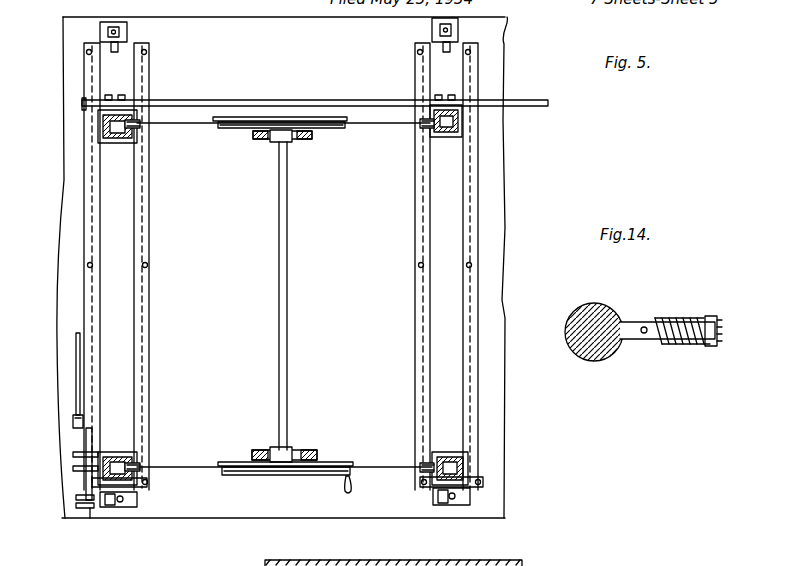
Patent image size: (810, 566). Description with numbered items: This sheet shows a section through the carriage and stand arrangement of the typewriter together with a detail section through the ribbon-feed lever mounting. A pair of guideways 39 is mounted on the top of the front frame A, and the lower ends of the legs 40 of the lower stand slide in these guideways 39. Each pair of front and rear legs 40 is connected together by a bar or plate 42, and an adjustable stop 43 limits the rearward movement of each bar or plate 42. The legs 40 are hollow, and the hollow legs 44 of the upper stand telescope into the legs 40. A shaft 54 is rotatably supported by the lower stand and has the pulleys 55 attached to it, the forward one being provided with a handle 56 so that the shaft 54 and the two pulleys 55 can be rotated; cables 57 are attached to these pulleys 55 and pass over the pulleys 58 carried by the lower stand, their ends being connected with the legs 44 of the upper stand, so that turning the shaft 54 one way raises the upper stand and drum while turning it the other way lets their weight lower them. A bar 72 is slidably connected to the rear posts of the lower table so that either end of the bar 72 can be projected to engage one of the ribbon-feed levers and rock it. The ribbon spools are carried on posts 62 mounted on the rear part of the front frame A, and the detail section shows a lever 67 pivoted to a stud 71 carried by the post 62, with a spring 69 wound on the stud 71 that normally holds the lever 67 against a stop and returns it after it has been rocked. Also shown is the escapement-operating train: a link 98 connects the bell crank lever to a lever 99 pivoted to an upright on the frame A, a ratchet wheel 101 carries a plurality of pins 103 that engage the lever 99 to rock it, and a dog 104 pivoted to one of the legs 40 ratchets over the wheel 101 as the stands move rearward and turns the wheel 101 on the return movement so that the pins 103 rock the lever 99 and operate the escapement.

In FIG. 5, the front frame A is at (497, 302).
In FIG. 5, the guideways 39 is at (88, 240).
In FIG. 5, the legs 40 is at (125, 148).
In FIG. 5, the bar or plate 42 is at (122, 243).
In FIG. 5, the adjustable stop 43 is at (128, 32).
In FIG. 5, the hollow legs 44 is at (108, 128).
In FIG. 5, the shaft 54 is at (288, 334).
In FIG. 5, the pulleys 55 is at (323, 134).
In FIG. 5, the handle 56 is at (356, 489).
In FIG. 5, the cables 57 is at (390, 127).
In FIG. 5, the pulleys 58 is at (150, 138).
In FIG. 14, the posts 62 is at (585, 354).
In FIG. 14, the lever 67 is at (712, 316).
In FIG. 14, the spring 69 is at (676, 344).
In FIG. 14, the stud 71 is at (640, 340).
In FIG. 5, the bar 72 is at (310, 100).
In FIG. 5, the link 98 is at (76, 390).
In FIG. 5, the lever 99 is at (75, 438).
In FIG. 5, the ratchet wheel 101 is at (95, 518).
In FIG. 5, the pins 103 is at (78, 503).
In FIG. 5, the dog 104 is at (84, 483).